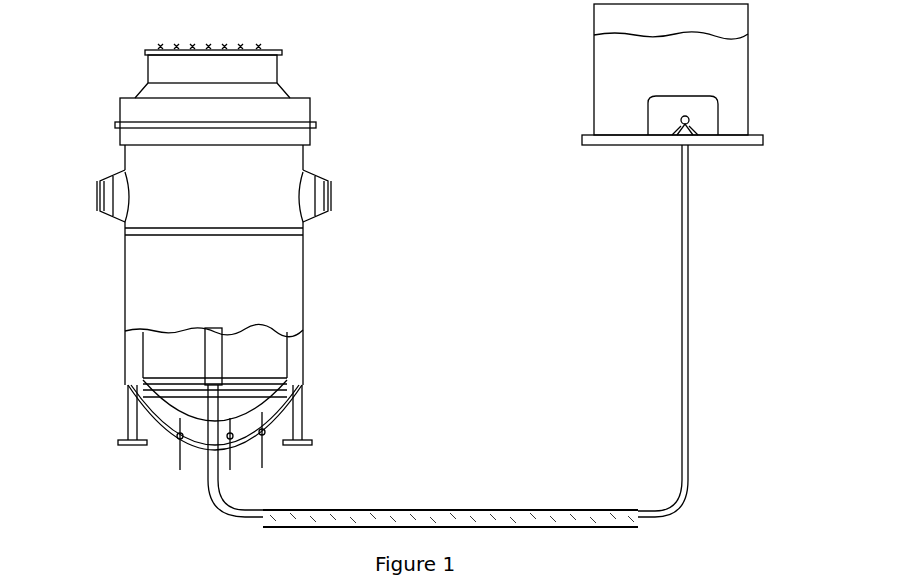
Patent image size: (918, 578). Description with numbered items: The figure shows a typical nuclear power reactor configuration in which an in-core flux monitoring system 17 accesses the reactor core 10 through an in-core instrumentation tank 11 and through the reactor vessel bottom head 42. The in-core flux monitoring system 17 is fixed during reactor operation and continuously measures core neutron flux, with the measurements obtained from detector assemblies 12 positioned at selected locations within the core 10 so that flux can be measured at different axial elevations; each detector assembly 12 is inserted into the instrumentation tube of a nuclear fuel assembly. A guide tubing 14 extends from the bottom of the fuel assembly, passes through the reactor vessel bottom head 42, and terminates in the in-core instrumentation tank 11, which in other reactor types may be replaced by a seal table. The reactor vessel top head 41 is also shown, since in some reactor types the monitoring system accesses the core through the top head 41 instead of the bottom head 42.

The reactor core 10 is at (193, 367).
The reactor vessel top head 41 is at (293, 68).
The detector assembly 12 is at (231, 336).
The reactor vessel bottom head 42 is at (198, 466).
The in-core instrumentation tank 11 is at (608, 67).
The guide tubing 14 is at (686, 267).
The in-core flux monitoring system 17 is at (675, 425).